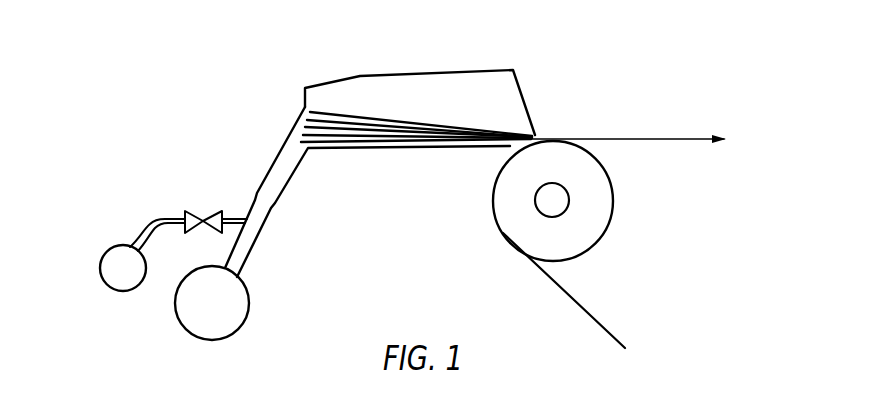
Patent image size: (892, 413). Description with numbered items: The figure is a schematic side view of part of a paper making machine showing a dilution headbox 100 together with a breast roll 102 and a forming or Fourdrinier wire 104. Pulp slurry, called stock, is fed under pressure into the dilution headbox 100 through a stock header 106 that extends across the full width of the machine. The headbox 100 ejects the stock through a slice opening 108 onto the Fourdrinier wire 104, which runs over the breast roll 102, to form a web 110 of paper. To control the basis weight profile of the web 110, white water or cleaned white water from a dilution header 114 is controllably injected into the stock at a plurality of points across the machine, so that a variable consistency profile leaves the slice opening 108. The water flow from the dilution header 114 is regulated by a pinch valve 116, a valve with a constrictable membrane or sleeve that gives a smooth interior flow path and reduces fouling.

The dilution headbox 100 is at (300, 71).
The breast roll 102 is at (590, 233).
The Fourdrinier wire 104 is at (668, 140).
The stock header 106 is at (245, 283).
The slice opening 108 is at (549, 128).
The web 110 is at (665, 139).
The dilution header 114 is at (110, 247).
The pinch valve 116 is at (203, 205).